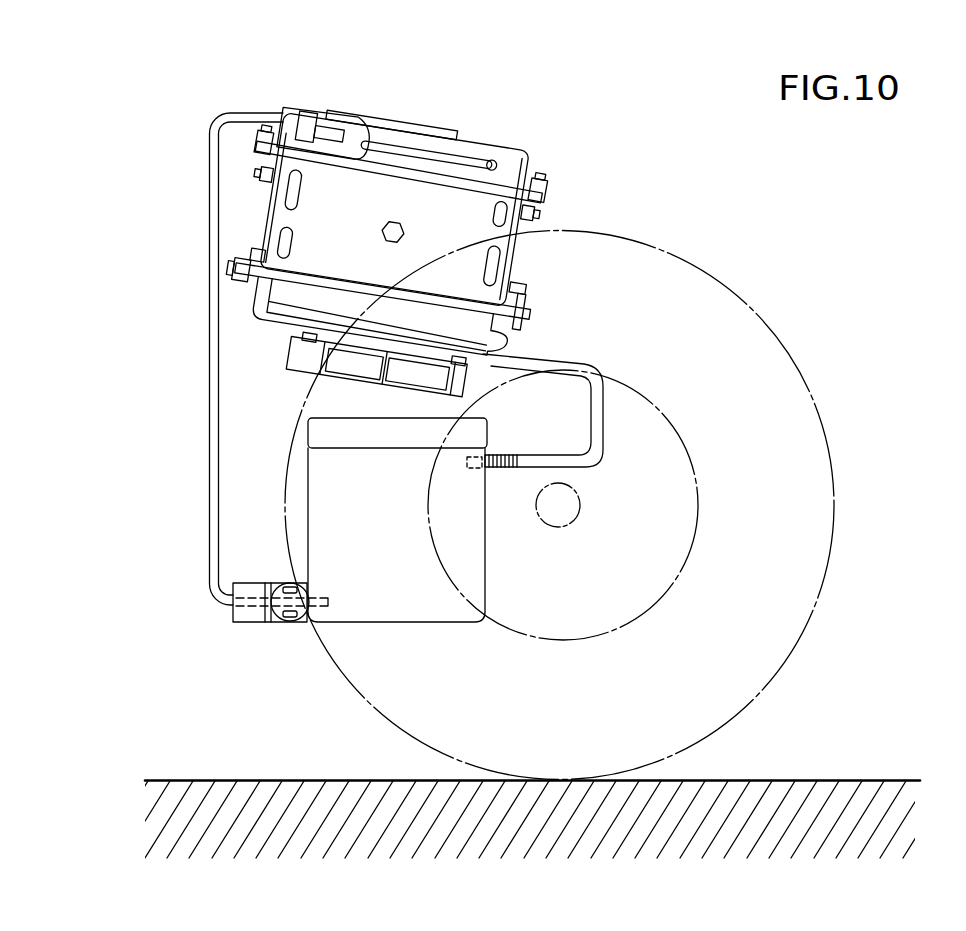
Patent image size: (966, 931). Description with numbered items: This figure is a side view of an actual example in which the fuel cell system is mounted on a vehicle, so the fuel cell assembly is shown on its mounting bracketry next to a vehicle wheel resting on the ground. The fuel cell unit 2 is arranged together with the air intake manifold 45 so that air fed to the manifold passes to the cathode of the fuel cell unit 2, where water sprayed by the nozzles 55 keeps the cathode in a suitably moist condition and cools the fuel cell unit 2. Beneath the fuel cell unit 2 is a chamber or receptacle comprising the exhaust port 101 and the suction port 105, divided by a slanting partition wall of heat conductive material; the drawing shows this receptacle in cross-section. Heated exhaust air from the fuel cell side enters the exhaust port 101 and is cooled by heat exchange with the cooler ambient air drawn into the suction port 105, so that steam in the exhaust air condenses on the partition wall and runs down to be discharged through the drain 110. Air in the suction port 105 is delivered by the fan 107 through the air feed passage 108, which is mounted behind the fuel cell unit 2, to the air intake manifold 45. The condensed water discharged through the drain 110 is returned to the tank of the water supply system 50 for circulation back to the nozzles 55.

The fuel cell unit 2 is at (497, 245).
The air intake manifold 45 is at (507, 145).
The water supply system 50 is at (130, 463).
The nozzles 55 is at (312, 132).
The exhaust port 101 is at (490, 331).
The suction port 105 is at (280, 332).
The fan 107 is at (290, 356).
The air feed passage 108 is at (410, 122).
The drain 110 is at (488, 357).